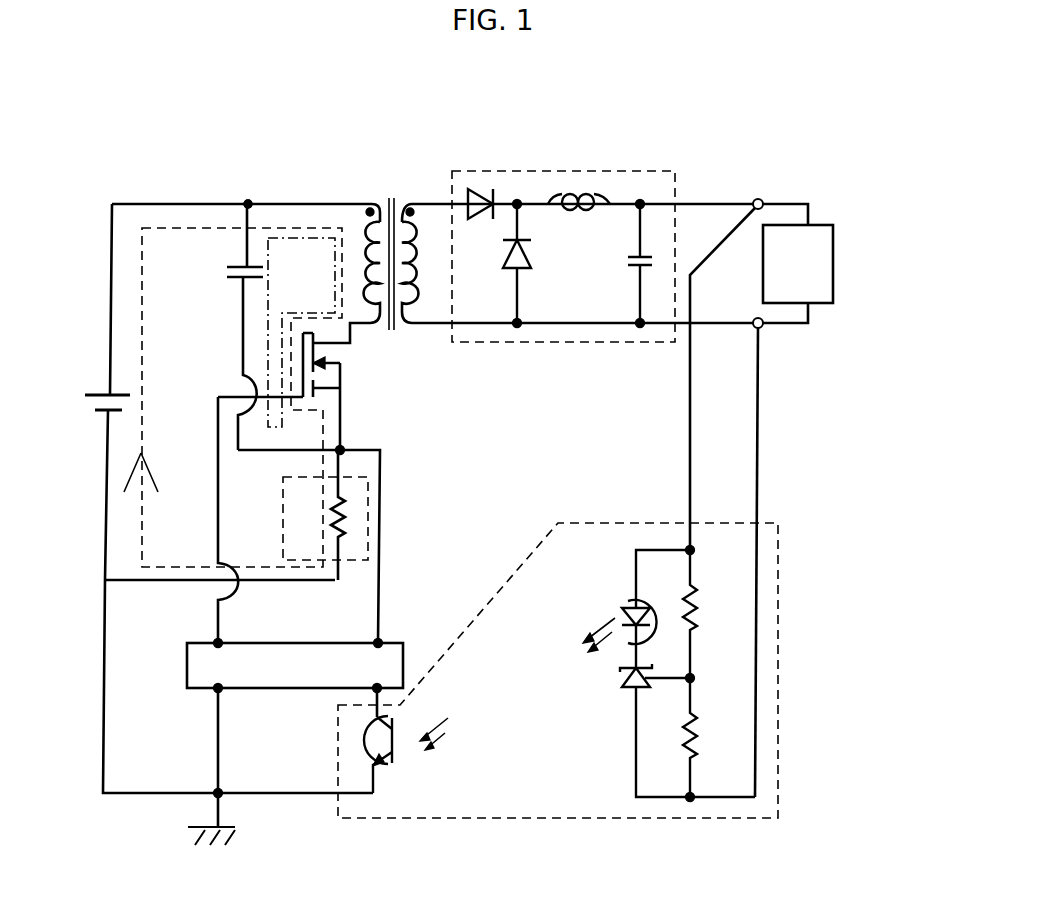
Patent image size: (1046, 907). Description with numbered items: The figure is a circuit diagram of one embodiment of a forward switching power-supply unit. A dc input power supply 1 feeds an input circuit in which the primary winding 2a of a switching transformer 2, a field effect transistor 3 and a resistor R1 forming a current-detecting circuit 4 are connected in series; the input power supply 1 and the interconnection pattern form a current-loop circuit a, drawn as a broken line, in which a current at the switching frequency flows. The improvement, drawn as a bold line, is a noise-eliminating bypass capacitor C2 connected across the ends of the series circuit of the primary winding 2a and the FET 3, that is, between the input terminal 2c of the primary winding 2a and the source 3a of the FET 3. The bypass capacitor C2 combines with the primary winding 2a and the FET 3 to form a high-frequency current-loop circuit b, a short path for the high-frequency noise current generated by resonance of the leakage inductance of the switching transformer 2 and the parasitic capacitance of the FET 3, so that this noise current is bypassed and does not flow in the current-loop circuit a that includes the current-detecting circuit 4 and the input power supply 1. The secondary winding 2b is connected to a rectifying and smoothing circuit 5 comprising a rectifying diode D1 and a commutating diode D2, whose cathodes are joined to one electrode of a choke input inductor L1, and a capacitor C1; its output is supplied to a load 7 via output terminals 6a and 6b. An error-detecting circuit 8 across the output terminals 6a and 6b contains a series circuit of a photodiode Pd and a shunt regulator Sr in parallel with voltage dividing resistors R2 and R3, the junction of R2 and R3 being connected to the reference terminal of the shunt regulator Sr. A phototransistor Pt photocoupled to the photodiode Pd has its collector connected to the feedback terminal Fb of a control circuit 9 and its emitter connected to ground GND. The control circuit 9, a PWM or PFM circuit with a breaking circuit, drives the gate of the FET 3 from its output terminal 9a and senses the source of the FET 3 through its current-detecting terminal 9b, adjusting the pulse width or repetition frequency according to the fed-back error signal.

The input power supply 1 is at (87, 404).
The switching transformer 2 is at (519, 231).
The primary winding 2a is at (355, 211).
The secondary winding 2b is at (420, 209).
The input terminal of the primary winding 2c is at (248, 203).
The field effect transistor 3 is at (343, 356).
The source of the FET 3a is at (340, 448).
The current-detecting circuit 4 is at (479, 515).
The rectifying and smoothing circuit 5 is at (662, 219).
The output terminal 6a is at (764, 201).
The output terminal 6b is at (764, 326).
The load 7 is at (835, 265).
The error-detecting circuit 8 is at (558, 700).
The control circuit 9 is at (270, 642).
The output terminal of the control circuit 9a is at (218, 642).
The current-detecting terminal 9b is at (380, 642).
The current-loop circuit a is at (142, 389).
The high-frequency current-loop circuit b is at (263, 282).
The bypass capacitor C2 is at (228, 325).
The resistor R1 is at (320, 515).
The rectifying diode D1 is at (481, 219).
The commutating diode D2 is at (530, 264).
The choke input inductor L1 is at (579, 222).
The capacitor C1 is at (624, 264).
The voltage dividing resistor R2 is at (692, 612).
The voltage dividing resistor R3 is at (692, 730).
The photodiode Pd is at (620, 617).
The shunt regulator Sr is at (619, 687).
The phototransistor Pt is at (406, 754).
The ground GND is at (213, 690).
The feedback terminal Fb is at (352, 690).